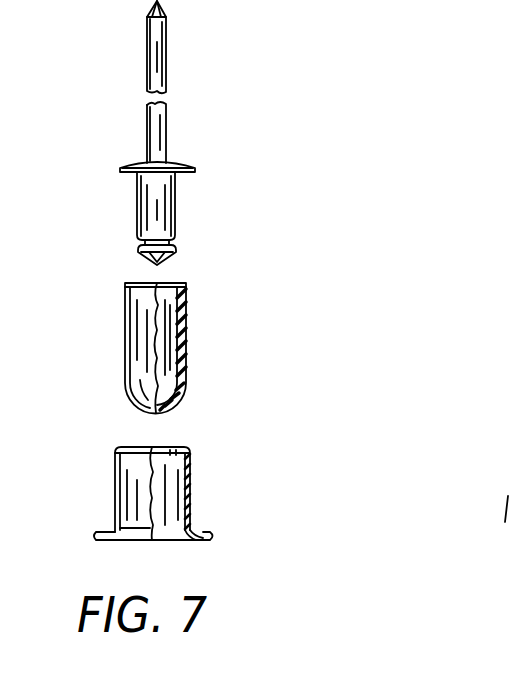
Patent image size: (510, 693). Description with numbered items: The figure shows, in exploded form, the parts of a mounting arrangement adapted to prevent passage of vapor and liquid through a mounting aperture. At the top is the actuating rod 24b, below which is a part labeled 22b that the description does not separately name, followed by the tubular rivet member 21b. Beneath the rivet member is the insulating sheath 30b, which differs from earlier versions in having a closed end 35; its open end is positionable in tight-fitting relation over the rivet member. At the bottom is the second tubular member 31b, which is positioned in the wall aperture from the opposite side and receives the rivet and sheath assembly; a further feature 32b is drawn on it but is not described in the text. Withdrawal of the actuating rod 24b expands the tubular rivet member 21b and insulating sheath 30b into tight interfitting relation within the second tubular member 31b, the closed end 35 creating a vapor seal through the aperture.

The actuating rod 24b is at (168, 47).
The rivet with flange head 22b is at (176, 160).
The tubular rivet member 21b is at (138, 212).
The insulating sheath 30b is at (183, 300).
The closed end 35 is at (175, 403).
The second tubular member 31b is at (190, 471).
The flange of bushing 32b is at (195, 530).